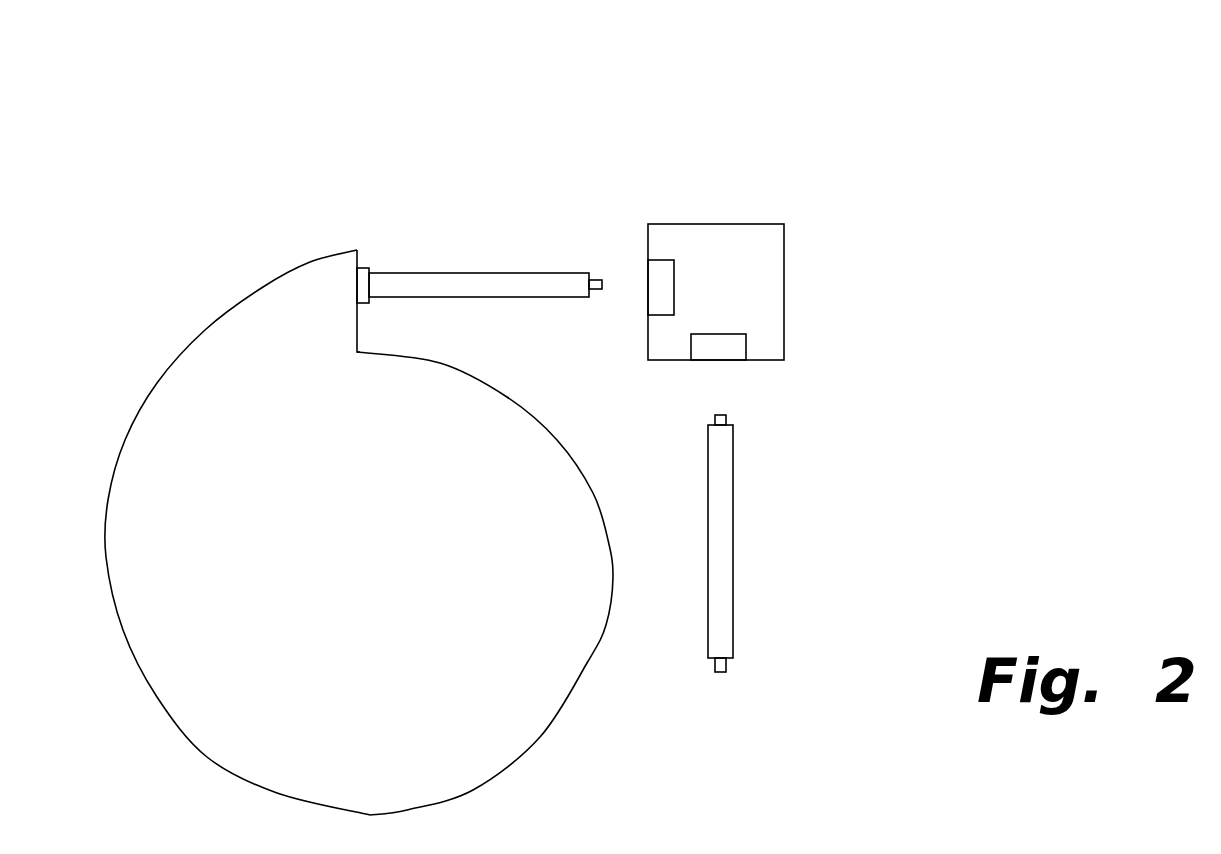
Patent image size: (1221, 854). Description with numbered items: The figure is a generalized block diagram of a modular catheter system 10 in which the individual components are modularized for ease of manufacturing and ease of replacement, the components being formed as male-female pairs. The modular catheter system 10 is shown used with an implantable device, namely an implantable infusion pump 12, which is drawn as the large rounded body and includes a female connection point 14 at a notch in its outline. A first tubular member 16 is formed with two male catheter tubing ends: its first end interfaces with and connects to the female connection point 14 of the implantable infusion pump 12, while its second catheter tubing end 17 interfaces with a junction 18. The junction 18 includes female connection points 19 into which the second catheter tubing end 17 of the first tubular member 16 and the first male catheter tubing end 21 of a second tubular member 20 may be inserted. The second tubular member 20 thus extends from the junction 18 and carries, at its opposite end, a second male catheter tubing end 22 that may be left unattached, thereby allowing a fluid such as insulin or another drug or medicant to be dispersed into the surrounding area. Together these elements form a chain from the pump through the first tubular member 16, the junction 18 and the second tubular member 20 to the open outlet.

The modular catheter system 10 is at (362, 52).
The implantable infusion pump 12 is at (107, 535).
The female connection point 14 is at (367, 267).
The first tubular member 16 is at (473, 273).
The second catheter tubing end 17 is at (598, 271).
The junction 18 is at (750, 223).
The female connection points 19 is at (647, 309).
The second tubular member 20 is at (733, 525).
The first male catheter tubing end 21 is at (716, 415).
The second male catheter tubing end 22 is at (726, 668).